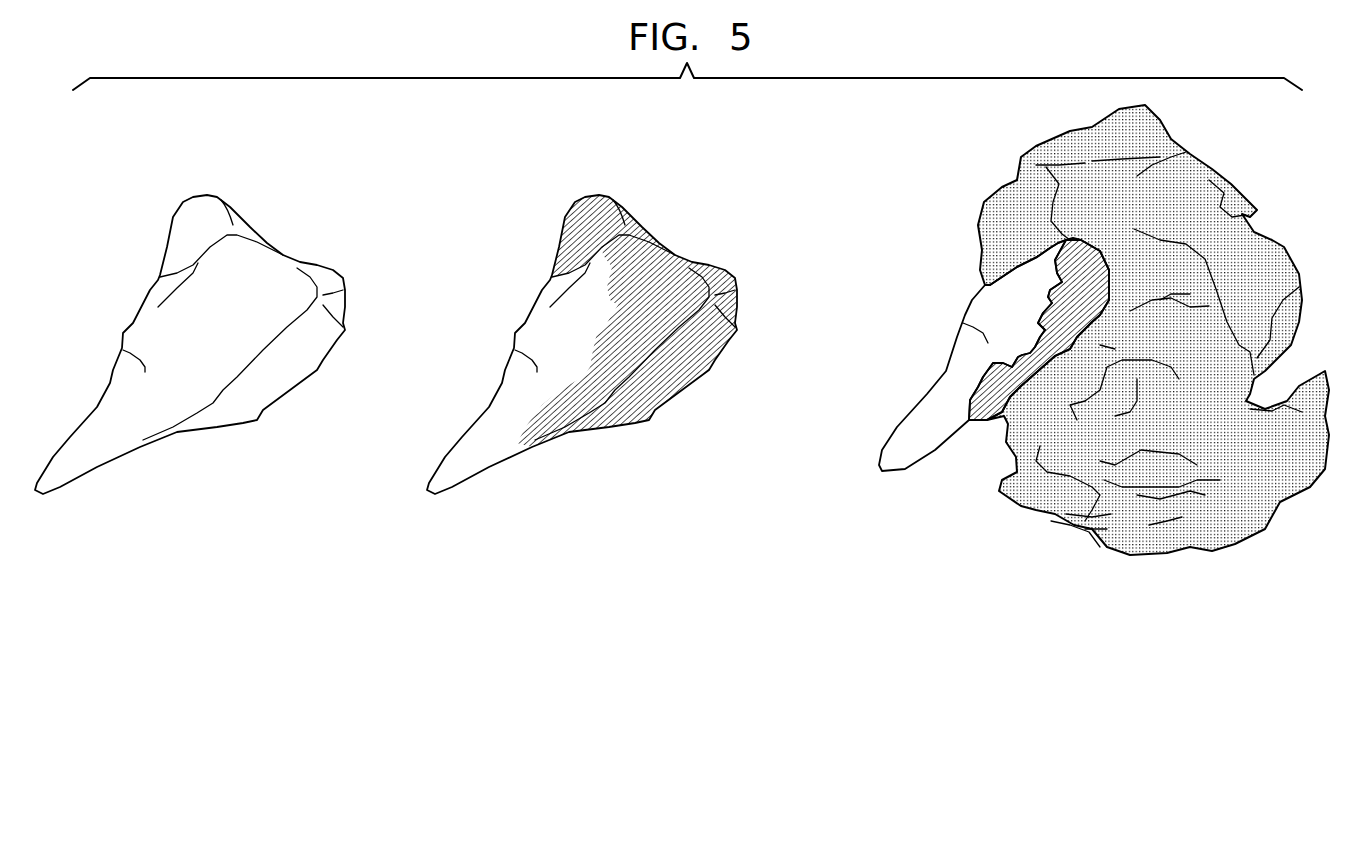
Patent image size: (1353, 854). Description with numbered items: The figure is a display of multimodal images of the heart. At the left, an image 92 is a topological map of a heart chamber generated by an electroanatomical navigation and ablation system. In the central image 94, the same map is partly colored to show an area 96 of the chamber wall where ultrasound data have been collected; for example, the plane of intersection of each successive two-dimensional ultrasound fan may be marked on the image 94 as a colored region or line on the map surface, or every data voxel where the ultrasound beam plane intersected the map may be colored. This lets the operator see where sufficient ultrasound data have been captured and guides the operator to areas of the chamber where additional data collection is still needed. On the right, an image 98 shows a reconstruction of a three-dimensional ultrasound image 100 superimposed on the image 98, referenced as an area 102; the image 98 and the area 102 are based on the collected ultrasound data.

The image 92 is at (180, 185).
The central image 94 is at (609, 309).
The area 96 is at (654, 321).
The image 98 is at (1104, 330).
The three-dimensional ultrasound image 100 is at (1210, 180).
The area 102 is at (980, 310).